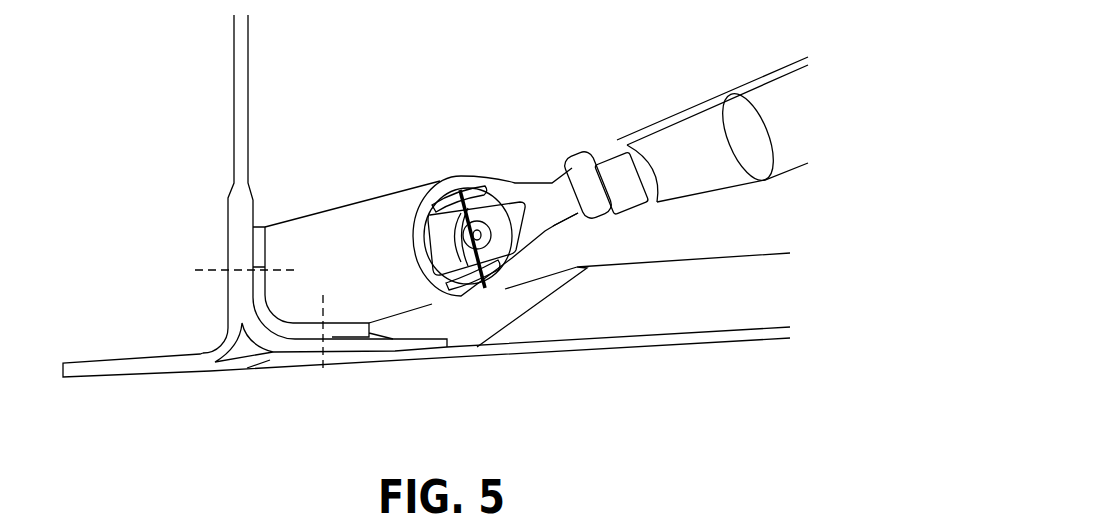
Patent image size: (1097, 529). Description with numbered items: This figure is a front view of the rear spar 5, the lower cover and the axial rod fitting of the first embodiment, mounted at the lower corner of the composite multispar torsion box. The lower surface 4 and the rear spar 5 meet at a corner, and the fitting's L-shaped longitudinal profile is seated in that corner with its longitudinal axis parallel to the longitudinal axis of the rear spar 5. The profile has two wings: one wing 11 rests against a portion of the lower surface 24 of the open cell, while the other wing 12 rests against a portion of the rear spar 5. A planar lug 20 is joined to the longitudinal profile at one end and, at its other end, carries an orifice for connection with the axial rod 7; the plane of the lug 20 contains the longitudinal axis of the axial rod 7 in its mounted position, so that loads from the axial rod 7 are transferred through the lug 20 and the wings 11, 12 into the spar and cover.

The lower surface 4 is at (500, 340).
The rear spar 5 is at (242, 113).
The axial rod 7 is at (785, 92).
The wing 11 is at (352, 330).
The wing 12 is at (258, 245).
The lug 20 is at (390, 210).
The lower surface 24 is at (292, 350).